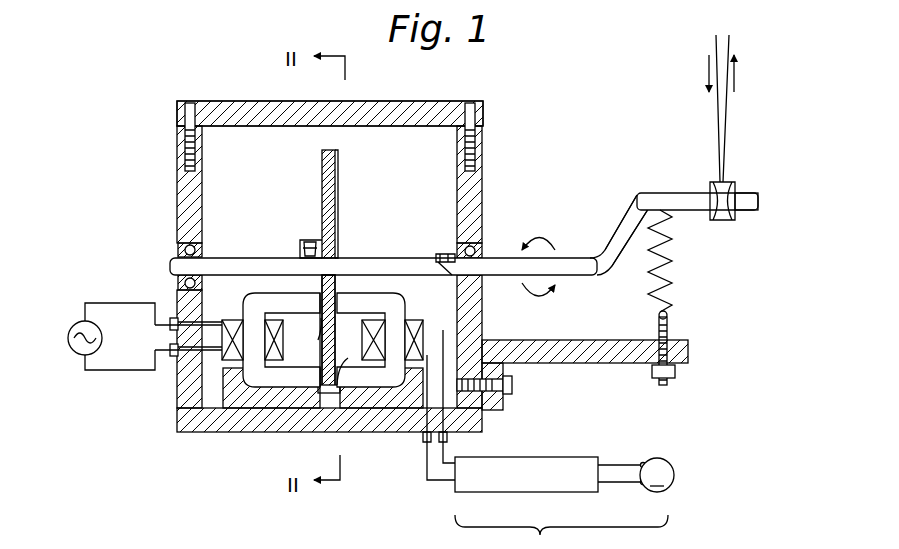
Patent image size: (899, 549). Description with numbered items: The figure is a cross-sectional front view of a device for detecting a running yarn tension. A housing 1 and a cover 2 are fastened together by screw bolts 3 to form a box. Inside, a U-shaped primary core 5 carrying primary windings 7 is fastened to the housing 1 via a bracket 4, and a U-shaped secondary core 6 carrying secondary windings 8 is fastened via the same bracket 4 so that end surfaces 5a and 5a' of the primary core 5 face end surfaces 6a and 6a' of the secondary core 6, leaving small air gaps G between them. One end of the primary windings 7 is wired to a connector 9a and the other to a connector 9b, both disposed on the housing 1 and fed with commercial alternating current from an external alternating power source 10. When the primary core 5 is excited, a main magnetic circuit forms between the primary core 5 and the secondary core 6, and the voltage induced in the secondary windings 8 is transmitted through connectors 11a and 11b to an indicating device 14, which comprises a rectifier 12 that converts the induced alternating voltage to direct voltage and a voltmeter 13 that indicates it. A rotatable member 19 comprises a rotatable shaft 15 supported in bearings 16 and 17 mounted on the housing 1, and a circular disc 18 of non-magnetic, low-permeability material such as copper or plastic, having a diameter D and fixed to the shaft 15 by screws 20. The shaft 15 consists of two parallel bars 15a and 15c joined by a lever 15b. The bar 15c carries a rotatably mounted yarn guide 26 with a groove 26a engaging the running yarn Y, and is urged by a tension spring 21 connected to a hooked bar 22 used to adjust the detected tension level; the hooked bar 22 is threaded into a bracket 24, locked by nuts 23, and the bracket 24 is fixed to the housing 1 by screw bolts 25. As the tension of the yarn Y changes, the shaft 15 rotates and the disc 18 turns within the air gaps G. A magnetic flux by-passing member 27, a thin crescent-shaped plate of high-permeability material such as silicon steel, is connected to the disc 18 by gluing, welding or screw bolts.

The housing 1 is at (177, 195).
The cover 2 is at (385, 96).
The screw bolts 3 is at (190, 103).
The bracket 4 is at (245, 408).
The primary core 5 is at (300, 395).
The end surface of primary core 5a is at (342, 305).
The end surface of primary core 5a' is at (314, 427).
The secondary core 6 is at (375, 400).
The end surface of secondary core 6a is at (315, 295).
The end surface of secondary core 6a' is at (347, 384).
The primary windings 7 is at (233, 320).
The secondary windings 8 is at (414, 320).
The connector 9a is at (172, 316).
The connector 9b is at (173, 358).
The alternating power source 10 is at (74, 322).
The connector 11a is at (427, 450).
The connector 11b is at (448, 448).
The rectifier 12 is at (487, 492).
The voltmeter 13 is at (657, 492).
The indicating device 14 is at (561, 532).
The rotatable shaft 15 is at (403, 258).
The bar 15a is at (598, 276).
The lever 15b is at (622, 218).
The bar 15c is at (690, 193).
The bearing 16 is at (178, 248).
The bearing 17 is at (483, 248).
The circular disc 18 is at (322, 175).
The rotatable member 19 is at (258, 254).
The screws 20 is at (310, 240).
The tension spring 21 is at (675, 290).
The hooked bar 22 is at (670, 330).
The nuts 23 is at (675, 378).
The bracket 24 is at (604, 363).
The screw bolts 25 is at (512, 385).
The yarn guide 26 is at (732, 182).
The groove 26a is at (722, 220).
The magnetic flux by-passing member 27 is at (338, 178).
The diameter D is at (300, 258).
The air gaps G is at (327, 351).
The running yarn Y is at (714, 47).